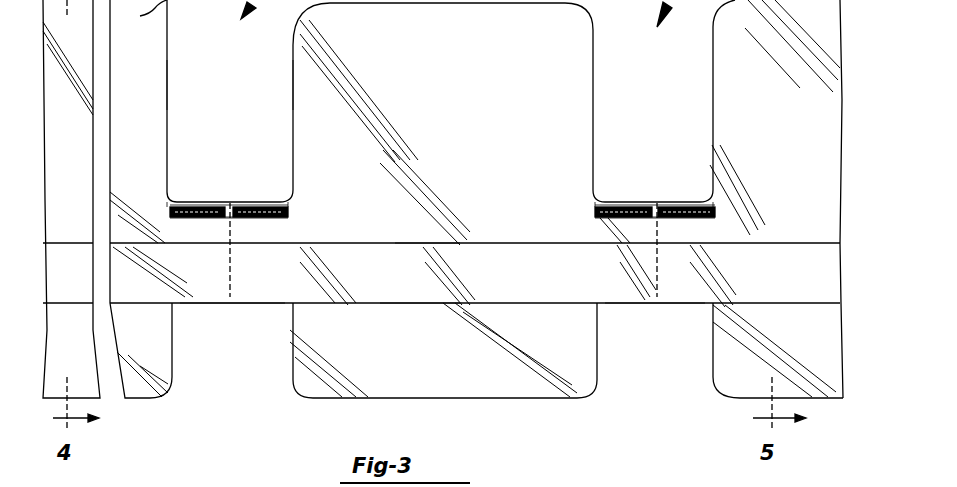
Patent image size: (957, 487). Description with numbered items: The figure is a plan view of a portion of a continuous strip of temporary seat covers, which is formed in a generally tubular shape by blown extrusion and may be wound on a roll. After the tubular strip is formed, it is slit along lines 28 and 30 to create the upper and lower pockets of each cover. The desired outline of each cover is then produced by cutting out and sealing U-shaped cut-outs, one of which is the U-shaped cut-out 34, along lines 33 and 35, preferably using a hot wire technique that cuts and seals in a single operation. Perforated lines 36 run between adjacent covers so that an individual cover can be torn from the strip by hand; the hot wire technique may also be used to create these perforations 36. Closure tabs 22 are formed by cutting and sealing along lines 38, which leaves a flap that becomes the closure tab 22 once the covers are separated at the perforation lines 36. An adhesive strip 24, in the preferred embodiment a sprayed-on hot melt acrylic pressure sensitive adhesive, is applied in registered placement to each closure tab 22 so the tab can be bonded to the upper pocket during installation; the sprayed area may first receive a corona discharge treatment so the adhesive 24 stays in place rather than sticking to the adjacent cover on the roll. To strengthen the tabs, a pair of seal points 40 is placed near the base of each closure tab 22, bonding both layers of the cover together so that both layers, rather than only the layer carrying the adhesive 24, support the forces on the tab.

The closure tab 22 is at (240, 202).
The adhesive strip 24 is at (266, 203).
The slit line 28 is at (391, 243).
The slit line 30 is at (423, 303).
The cut and seal line 33 is at (167, 53).
The U-shaped cut-out 34 is at (227, 384).
The cut and seal line 35 is at (172, 350).
The perforated line 36 is at (233, 268).
The cut and seal line 38 is at (292, 216).
The seal point 40 is at (165, 203).